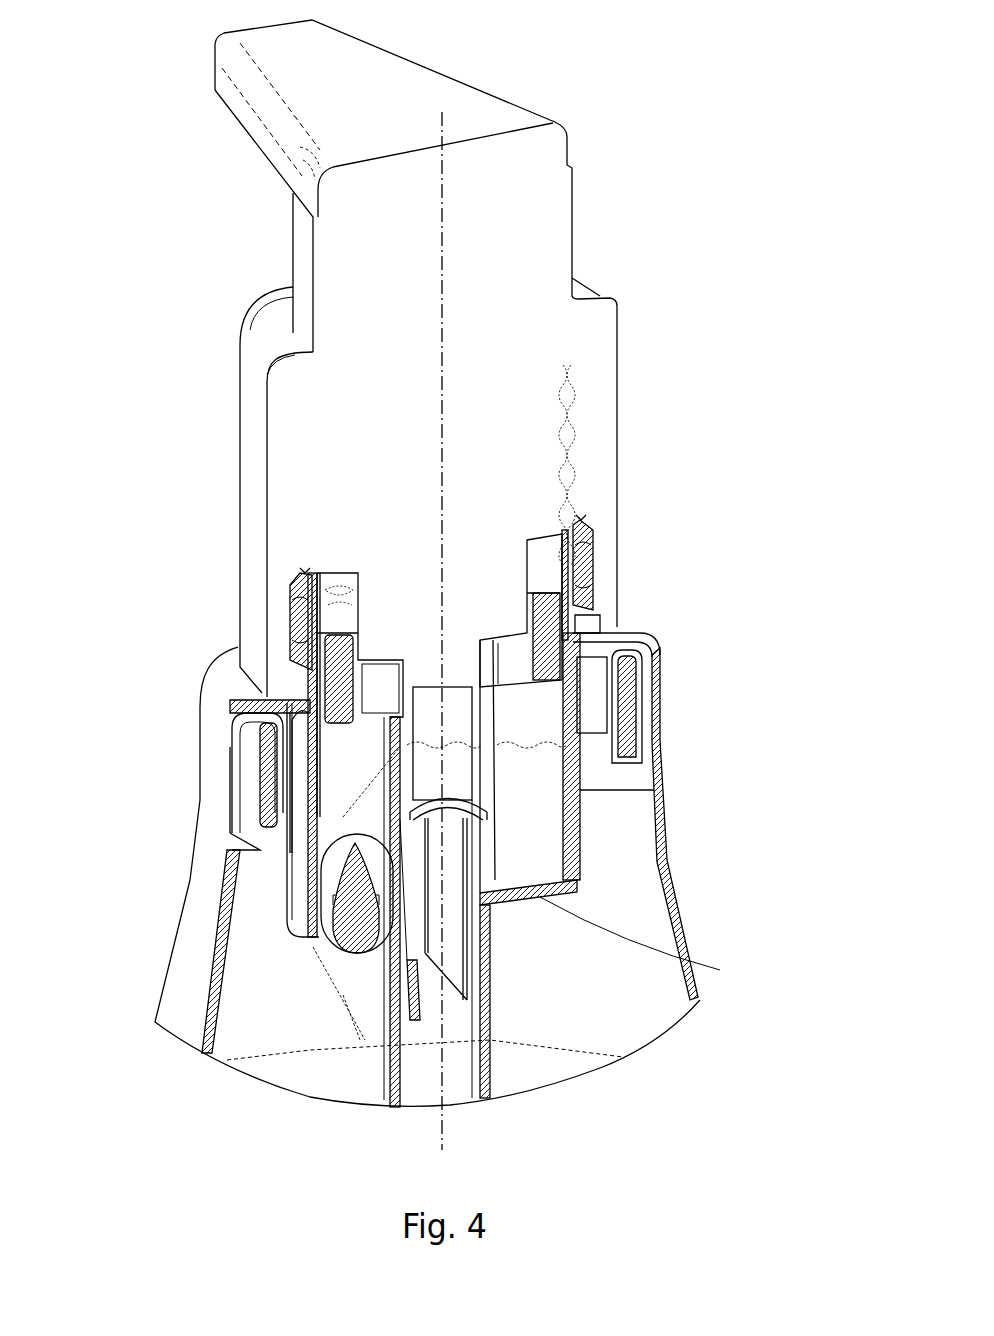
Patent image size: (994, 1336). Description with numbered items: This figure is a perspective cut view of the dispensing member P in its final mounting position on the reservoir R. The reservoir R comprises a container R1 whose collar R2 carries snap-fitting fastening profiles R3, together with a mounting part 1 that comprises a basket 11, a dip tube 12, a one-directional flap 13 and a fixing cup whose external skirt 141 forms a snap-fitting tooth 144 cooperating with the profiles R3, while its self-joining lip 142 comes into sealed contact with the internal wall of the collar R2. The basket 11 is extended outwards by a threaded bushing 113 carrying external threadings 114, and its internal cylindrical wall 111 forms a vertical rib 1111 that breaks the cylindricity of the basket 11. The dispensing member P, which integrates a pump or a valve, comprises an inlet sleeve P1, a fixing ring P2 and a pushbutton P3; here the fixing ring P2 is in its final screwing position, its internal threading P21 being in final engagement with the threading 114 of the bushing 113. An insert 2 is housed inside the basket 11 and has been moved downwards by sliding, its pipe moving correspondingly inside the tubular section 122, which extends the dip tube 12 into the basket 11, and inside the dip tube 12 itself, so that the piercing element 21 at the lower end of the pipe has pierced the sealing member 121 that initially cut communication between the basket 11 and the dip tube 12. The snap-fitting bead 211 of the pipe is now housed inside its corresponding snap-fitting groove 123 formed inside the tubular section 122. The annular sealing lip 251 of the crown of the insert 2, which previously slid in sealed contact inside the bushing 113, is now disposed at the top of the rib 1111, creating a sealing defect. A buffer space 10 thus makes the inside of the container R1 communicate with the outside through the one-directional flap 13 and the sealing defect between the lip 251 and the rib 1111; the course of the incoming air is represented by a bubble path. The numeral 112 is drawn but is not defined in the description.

The dispensing member P is at (478, 346).
The inlet sleeve P1 is at (470, 718).
The fixing ring P2 is at (605, 562).
The internal threading P21 is at (303, 640).
The pushbutton P3 is at (452, 128).
The threadings 114 is at (300, 565).
The threaded bushing 113 is at (305, 678).
The external skirt 141 is at (214, 720).
The self-joining lip 142 is at (290, 752).
The snap-fitting tooth 144 is at (262, 818).
The internal cylindrical wall 111 is at (320, 838).
The insert 2 is at (375, 797).
The snap-fitting groove 123 is at (340, 850).
The one-directional flap 13 is at (328, 962).
The sealing member 121 is at (410, 995).
The piercing element 21 is at (430, 962).
The dip tube 12 is at (490, 1025).
The tubular section 122 is at (490, 860).
The inner wall 112 is at (490, 900).
The snap-fitting bead 211 is at (580, 885).
The reservoir R is at (695, 898).
The container R1 is at (665, 870).
The mounting part 1 is at (605, 841).
The basket 11 is at (605, 792).
The vertical rib 1111 is at (640, 752).
The fastening profile R3 is at (655, 700).
The collar R2 is at (648, 650).
The annular sealing lip 251 is at (585, 625).
The buffer space 10 is at (533, 823).